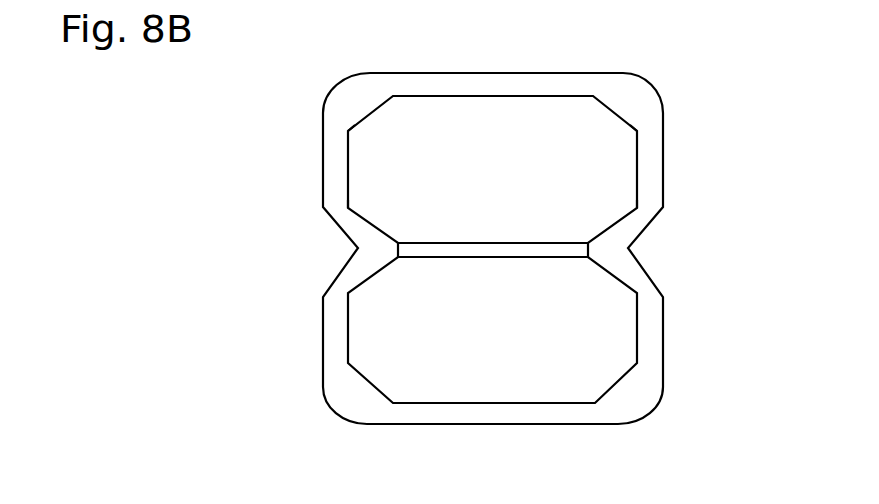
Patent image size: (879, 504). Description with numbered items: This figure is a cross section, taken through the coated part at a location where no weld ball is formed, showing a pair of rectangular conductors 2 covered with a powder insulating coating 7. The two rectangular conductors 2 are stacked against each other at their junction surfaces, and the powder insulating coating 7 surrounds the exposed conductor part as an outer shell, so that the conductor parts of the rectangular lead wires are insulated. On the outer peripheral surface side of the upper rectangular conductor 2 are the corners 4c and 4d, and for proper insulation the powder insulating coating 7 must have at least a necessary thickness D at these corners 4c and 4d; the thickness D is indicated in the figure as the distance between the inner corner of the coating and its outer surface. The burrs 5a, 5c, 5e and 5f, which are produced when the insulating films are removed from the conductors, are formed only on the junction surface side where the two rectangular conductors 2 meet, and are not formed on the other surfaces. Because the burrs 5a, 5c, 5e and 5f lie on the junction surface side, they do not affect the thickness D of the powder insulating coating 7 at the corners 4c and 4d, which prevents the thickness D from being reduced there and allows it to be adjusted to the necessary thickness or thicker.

The rectangular conductor 2 is at (488, 110).
The powder insulating coating 7 is at (333, 170).
The corner 4c is at (362, 130).
The corner 4d is at (623, 130).
The burr 5a is at (590, 248).
The burr 5c is at (398, 248).
The burr 5e is at (348, 208).
The burr 5f is at (637, 208).
The thickness D is at (412, 152).